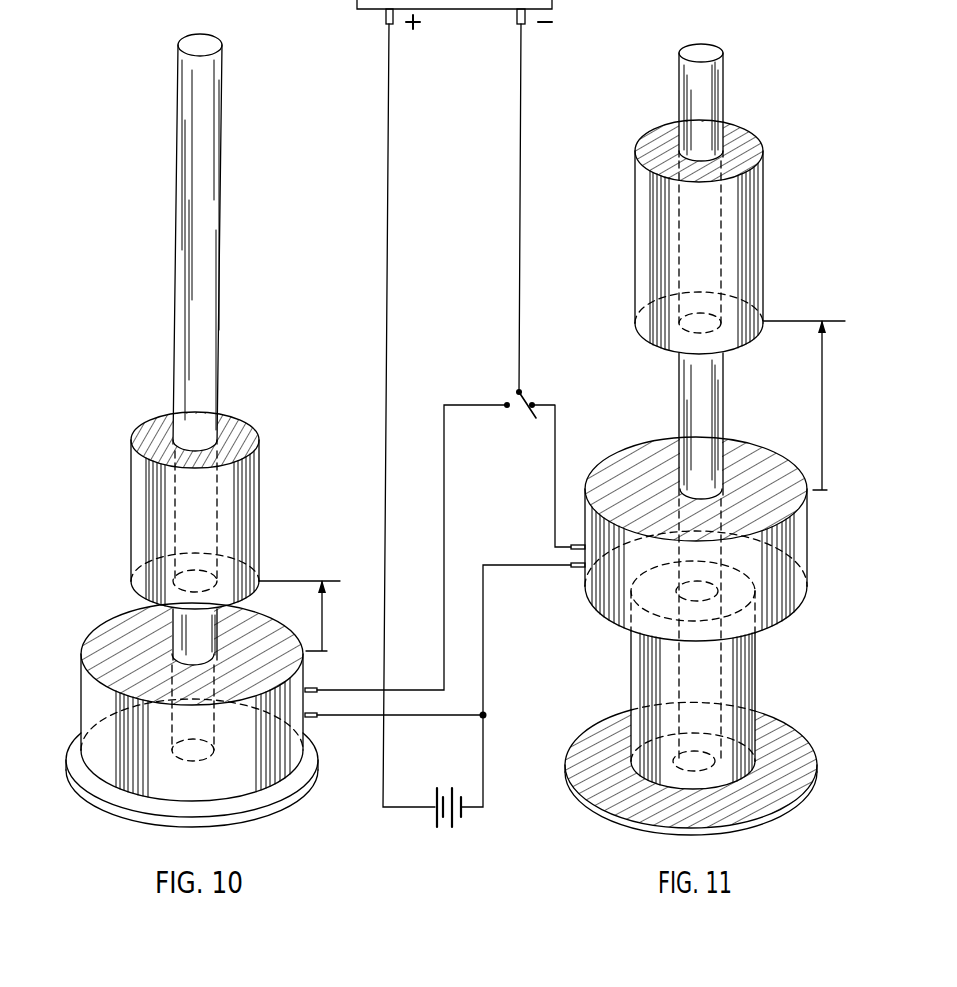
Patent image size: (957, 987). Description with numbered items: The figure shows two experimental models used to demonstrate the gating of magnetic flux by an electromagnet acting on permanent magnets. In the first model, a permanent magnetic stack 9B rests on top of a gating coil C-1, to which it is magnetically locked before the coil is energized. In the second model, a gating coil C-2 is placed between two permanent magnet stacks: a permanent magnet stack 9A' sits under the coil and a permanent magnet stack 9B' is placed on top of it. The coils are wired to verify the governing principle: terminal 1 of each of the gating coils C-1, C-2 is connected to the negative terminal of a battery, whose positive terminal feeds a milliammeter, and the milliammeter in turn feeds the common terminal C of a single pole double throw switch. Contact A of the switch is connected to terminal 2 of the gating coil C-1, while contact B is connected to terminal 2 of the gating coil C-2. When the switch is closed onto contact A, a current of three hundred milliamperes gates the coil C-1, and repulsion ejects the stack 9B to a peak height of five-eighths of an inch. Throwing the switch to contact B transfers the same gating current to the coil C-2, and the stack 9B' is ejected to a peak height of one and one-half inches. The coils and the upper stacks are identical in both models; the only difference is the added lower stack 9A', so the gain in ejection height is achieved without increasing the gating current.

In FIG. 10, the magnetic stack 9B is at (216, 514).
In FIG. 10, the gating coil C-1 is at (81, 680).
In FIG. 10, the terminal 1 is at (313, 717).
In FIG. 11, the terminal 1 is at (578, 567).
In FIG. 10, the terminal 2 is at (311, 690).
In FIG. 11, the terminal 2 is at (578, 547).
In FIG. 10, the terminal of switch SW-1 A is at (507, 406).
In FIG. 10, the terminal of switch SW-1 B is at (535, 405).
In FIG. 10, the common terminal of switch SW-1 C is at (519, 392).
In FIG. 11, the permanent magnet stack 9B' is at (725, 237).
In FIG. 11, the gating coil C-2 is at (806, 582).
In FIG. 11, the permanent magnet stack 9A' is at (717, 646).